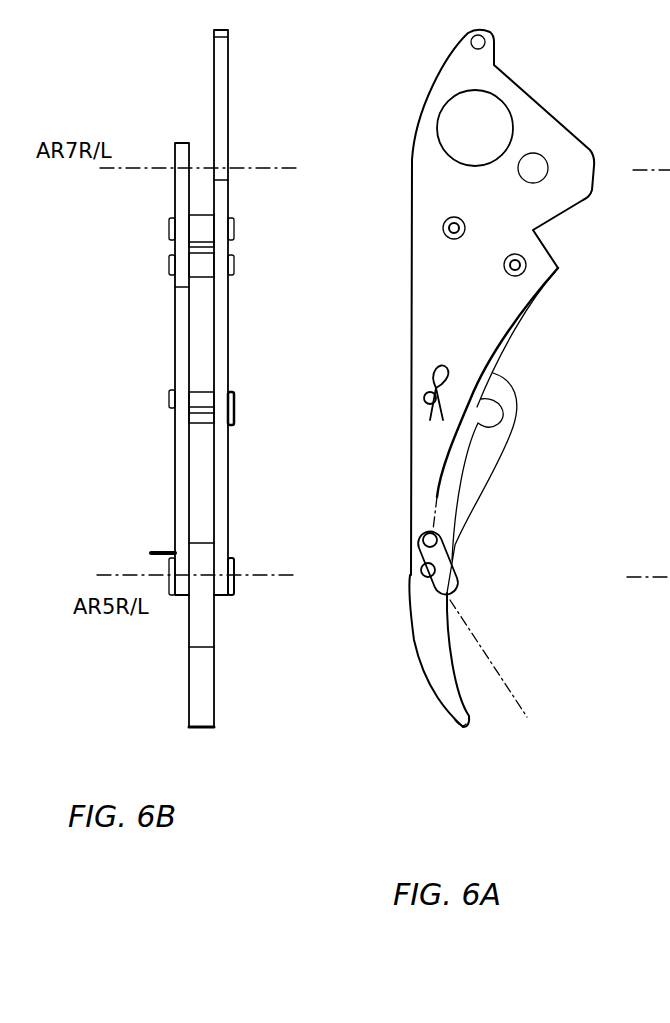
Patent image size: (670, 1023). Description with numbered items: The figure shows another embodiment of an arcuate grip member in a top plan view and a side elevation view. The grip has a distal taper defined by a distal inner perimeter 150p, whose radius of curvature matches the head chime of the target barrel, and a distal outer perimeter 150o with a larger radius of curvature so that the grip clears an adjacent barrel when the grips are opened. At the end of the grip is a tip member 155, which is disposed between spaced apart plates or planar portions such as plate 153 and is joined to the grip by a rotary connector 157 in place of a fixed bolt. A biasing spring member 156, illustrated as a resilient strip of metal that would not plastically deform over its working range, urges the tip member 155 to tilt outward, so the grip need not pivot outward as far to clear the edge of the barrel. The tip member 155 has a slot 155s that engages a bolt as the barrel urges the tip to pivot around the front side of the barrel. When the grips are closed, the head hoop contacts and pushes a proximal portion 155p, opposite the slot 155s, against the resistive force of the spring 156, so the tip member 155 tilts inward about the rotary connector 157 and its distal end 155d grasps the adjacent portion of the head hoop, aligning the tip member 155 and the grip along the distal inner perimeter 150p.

In FIG. 6A, the plate 153 is at (425, 183).
In FIG. 6A, the distal outer perimeter 150o is at (408, 587).
In FIG. 6A, the distal inner perimeter 150p is at (477, 633).
In FIG. 6B, the tip member 155 is at (203, 668).
In FIG. 6A, the tip member 155 is at (437, 667).
In FIG. 6A, the proximal portion 155p is at (520, 410).
In FIG. 6A, the slot 155s is at (463, 445).
In FIG. 6A, the distal end 155d is at (458, 727).
In FIG. 6A, the biasing spring member 156 is at (510, 350).
In FIG. 6A, the rotary connector 157 is at (453, 572).